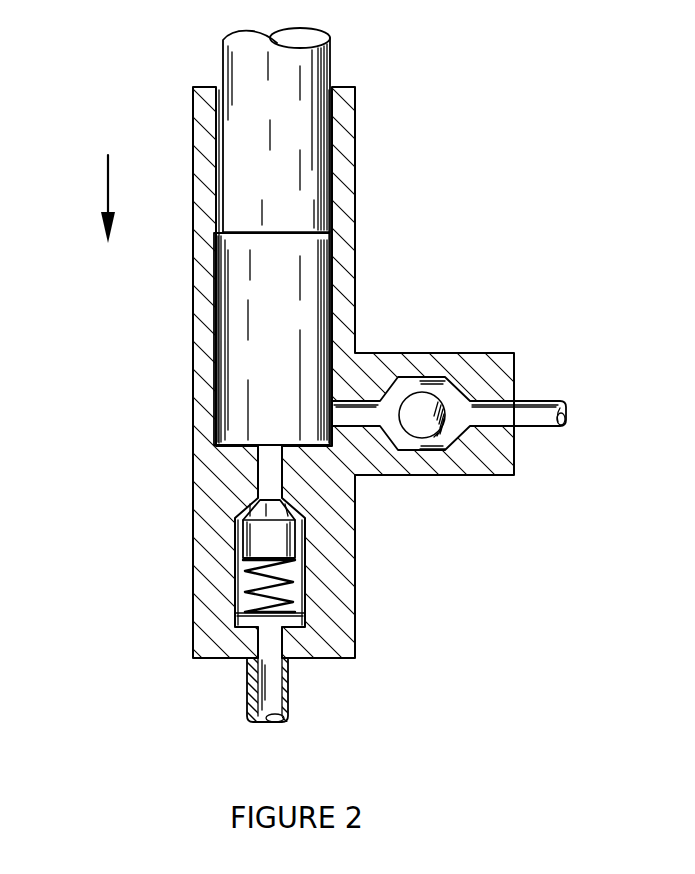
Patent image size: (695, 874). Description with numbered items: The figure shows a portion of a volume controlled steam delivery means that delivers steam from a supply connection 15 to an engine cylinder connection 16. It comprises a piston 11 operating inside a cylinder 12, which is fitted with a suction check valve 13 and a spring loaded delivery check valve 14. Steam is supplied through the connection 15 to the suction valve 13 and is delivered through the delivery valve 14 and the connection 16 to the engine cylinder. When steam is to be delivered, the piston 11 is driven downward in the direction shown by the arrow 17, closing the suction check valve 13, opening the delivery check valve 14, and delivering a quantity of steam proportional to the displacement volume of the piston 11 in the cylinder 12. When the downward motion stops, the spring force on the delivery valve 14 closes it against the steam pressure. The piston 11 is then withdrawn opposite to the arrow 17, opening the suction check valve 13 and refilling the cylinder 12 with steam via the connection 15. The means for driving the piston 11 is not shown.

The piston 11 is at (287, 91).
The cylinder 12 is at (275, 282).
The suction check valve 13 is at (437, 382).
The delivery check valve 14 is at (267, 537).
The supply connection 15 is at (547, 403).
The engine cylinder connection 16 is at (290, 690).
The arrow 17 is at (104, 192).